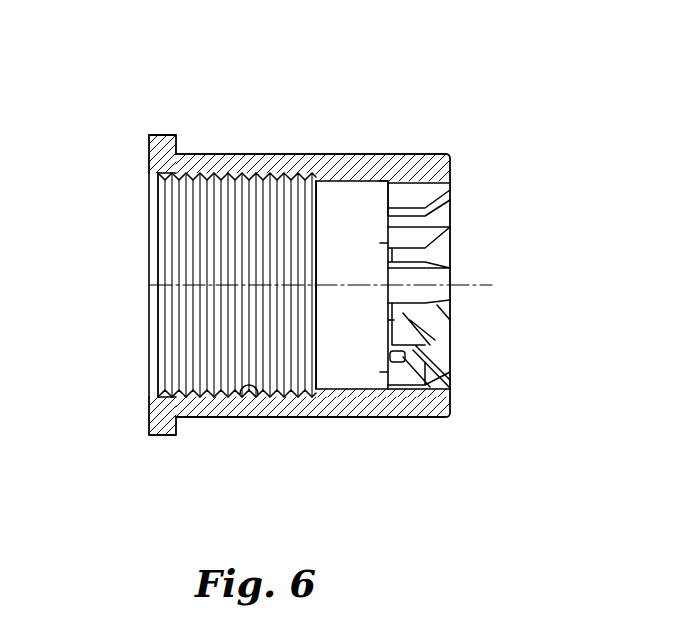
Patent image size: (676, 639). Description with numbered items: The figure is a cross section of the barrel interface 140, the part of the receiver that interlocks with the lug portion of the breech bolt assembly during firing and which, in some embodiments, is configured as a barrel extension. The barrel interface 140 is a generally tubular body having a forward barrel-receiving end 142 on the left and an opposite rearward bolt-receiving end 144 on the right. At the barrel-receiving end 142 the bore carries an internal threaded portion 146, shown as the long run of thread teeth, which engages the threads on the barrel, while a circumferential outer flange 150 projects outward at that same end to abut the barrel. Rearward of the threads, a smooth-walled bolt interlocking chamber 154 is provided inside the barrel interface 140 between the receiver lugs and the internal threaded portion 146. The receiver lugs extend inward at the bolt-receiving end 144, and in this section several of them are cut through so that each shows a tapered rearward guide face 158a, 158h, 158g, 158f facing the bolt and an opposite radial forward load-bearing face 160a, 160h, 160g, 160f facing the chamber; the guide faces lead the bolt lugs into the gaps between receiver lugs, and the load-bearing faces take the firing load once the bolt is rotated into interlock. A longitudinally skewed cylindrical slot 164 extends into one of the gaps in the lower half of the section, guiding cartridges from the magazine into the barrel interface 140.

The barrel interface 140 is at (248, 154).
The forward barrel-receiving end 142 is at (148, 358).
The rearward bolt-receiving end 144 is at (450, 397).
The internal threaded portion 146 is at (232, 398).
The circumferential outer flange 150 is at (183, 135).
The bolt interlocking chamber 154 is at (325, 181).
The tapered rearward guide face 158a is at (450, 168).
The tapered rearward guide face 158h is at (450, 248).
The tapered rearward guide face 158g is at (450, 337).
The tapered rearward guide face 158f is at (450, 372).
The radial forward load-bearing face 160a is at (382, 179).
The radial forward load-bearing face 160h is at (383, 243).
The radial forward load-bearing face 160g is at (392, 320).
The radial forward load-bearing face 160f is at (382, 372).
The longitudinally skewed cylindrical slot 164 is at (437, 353).